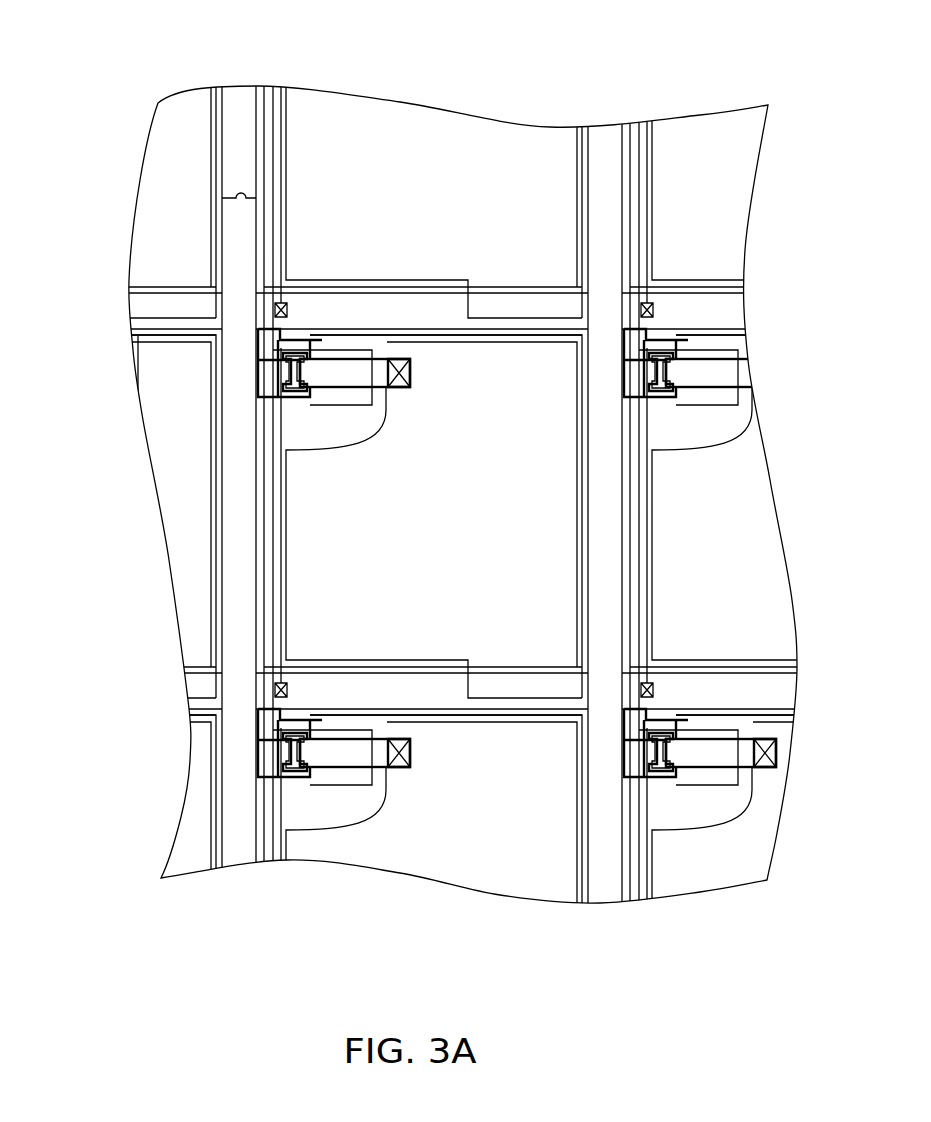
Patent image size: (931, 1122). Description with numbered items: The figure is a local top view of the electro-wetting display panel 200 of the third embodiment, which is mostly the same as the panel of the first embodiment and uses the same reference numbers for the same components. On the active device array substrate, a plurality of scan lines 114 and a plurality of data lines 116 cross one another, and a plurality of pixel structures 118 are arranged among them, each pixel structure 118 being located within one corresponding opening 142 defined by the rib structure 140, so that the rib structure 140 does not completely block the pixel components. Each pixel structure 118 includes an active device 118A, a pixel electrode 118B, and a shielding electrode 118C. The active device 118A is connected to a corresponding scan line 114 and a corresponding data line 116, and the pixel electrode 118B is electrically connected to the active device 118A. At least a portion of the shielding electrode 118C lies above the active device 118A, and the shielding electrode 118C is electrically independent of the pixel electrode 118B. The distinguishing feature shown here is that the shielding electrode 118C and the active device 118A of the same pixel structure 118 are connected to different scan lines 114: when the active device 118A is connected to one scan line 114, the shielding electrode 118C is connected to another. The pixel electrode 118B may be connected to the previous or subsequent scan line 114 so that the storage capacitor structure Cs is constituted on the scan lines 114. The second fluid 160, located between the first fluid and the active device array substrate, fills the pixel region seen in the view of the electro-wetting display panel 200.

The scan line 114 is at (320, 329).
The data line 116 is at (241, 197).
The pixel structure 118 is at (221, 401).
The active device 118A is at (297, 393).
The pixel electrode 118B is at (286, 467).
The shielding electrode 118C is at (278, 395).
The rib structure 140 is at (360, 340).
The opening 142 is at (430, 348).
The second fluid 160 is at (333, 542).
The electro-wetting display panel 200 is at (687, 982).
The storage capacitor structure Cs is at (383, 792).